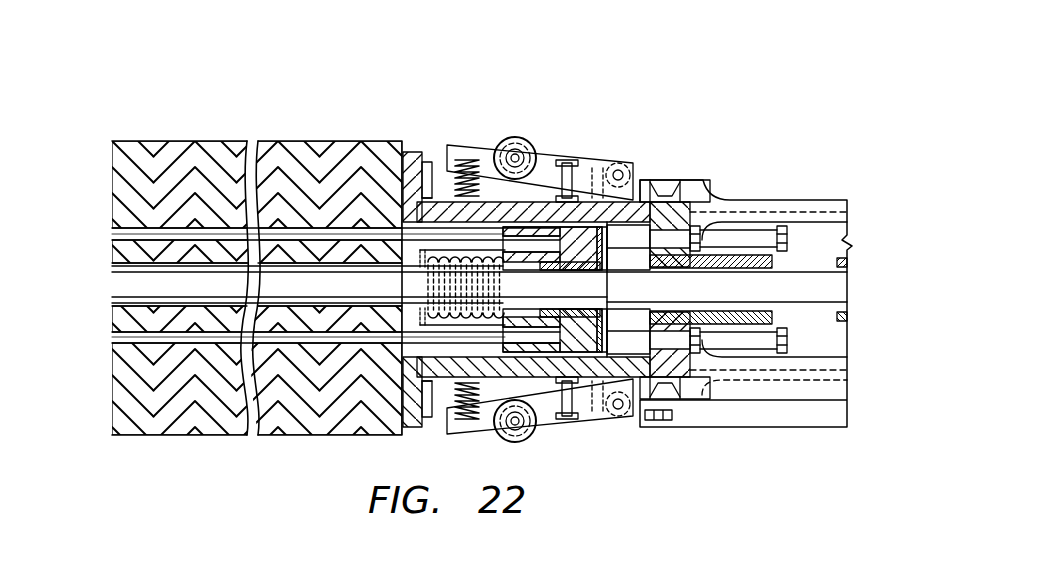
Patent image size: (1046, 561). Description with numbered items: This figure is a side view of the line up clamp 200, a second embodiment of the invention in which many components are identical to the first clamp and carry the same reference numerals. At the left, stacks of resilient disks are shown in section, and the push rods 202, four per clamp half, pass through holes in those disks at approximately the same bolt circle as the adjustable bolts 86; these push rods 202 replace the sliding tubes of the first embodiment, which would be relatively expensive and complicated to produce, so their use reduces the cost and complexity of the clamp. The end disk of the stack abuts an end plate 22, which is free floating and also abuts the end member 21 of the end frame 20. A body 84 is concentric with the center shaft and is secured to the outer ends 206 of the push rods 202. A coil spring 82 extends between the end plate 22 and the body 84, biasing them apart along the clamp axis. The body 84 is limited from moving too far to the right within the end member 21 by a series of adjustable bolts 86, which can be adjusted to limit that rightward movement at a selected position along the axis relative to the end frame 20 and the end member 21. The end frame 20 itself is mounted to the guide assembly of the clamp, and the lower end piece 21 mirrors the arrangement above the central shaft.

The line up clamp 200 is at (474, 110).
The end frame 20 is at (723, 205).
The end member 21 is at (428, 420).
The end plate 22 is at (410, 152).
The coil spring 82 is at (425, 283).
The body 84 is at (610, 322).
The adjustable bolts 86 is at (655, 215).
The push rods 202 is at (112, 233).
The outer ends 206 is at (541, 192).